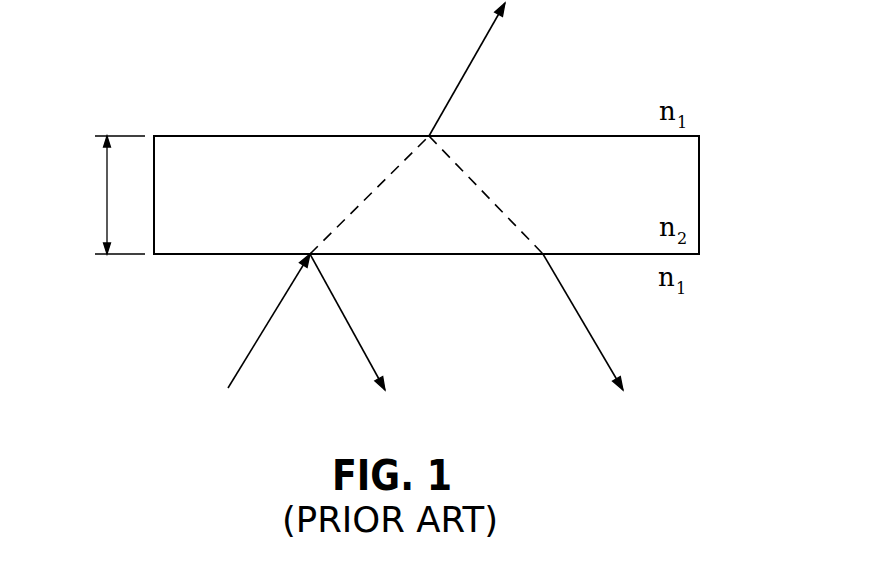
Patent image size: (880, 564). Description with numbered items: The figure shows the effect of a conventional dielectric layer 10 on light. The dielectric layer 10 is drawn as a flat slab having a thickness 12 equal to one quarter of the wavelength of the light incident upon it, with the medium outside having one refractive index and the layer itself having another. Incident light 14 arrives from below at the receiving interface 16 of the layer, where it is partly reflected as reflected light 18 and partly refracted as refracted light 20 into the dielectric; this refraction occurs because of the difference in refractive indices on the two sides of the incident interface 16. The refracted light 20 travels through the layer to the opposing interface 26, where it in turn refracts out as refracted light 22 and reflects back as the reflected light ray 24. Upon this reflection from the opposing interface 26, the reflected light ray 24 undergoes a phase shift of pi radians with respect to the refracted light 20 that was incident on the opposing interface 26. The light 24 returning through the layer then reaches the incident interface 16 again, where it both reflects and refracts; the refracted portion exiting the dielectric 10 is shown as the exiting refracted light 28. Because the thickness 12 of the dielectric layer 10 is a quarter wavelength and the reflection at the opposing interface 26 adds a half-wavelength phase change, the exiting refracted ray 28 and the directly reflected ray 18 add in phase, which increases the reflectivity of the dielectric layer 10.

The dielectric layer 10 is at (683, 179).
The thickness 12 is at (106, 188).
The incident light 14 is at (255, 346).
The receiving interface 16 is at (237, 255).
The reflected light 18 is at (357, 337).
The refracted light 20 is at (367, 194).
The refracted light from opposing interface 22 is at (460, 70).
The reflected light ray 24 is at (490, 193).
The opposing interface 26 is at (250, 136).
The refracted light exiting the dielectric 28 is at (577, 315).